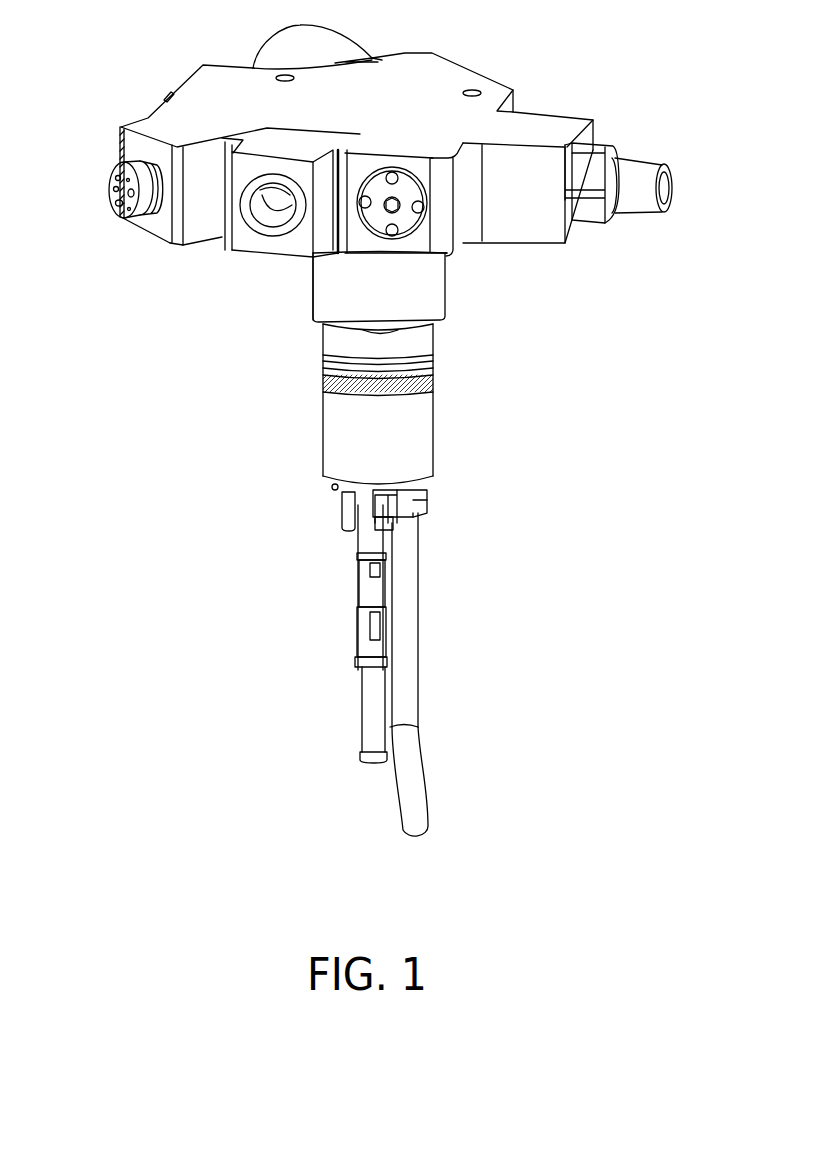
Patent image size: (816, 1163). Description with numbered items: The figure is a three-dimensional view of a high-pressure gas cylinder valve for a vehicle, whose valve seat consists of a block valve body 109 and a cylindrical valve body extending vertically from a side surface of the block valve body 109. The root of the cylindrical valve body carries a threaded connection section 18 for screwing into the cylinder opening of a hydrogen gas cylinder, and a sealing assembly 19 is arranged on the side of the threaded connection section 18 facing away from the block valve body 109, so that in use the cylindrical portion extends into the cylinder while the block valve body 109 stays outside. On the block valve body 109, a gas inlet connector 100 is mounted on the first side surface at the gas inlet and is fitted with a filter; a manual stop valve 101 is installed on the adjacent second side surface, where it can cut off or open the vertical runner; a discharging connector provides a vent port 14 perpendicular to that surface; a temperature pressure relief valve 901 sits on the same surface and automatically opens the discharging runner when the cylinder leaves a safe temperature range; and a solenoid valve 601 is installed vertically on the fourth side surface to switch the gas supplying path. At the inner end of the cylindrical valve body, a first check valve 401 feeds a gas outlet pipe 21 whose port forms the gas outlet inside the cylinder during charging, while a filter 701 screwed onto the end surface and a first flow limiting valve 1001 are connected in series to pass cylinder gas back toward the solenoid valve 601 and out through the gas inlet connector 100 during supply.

The solenoid valve 601 is at (330, 43).
The block valve body 109 is at (448, 73).
The gas inlet connector 100 is at (648, 170).
The temperature pressure relief valve 901 is at (113, 208).
The vent port 14 is at (278, 215).
The manual stop valve 101 is at (383, 213).
The threaded connection section 18 is at (432, 295).
The sealing assembly 19 is at (435, 367).
The first check valve 401 is at (428, 502).
The gas outlet pipe 21 is at (413, 598).
The first flow limiting valve 1001 is at (370, 595).
The filter 701 is at (370, 715).